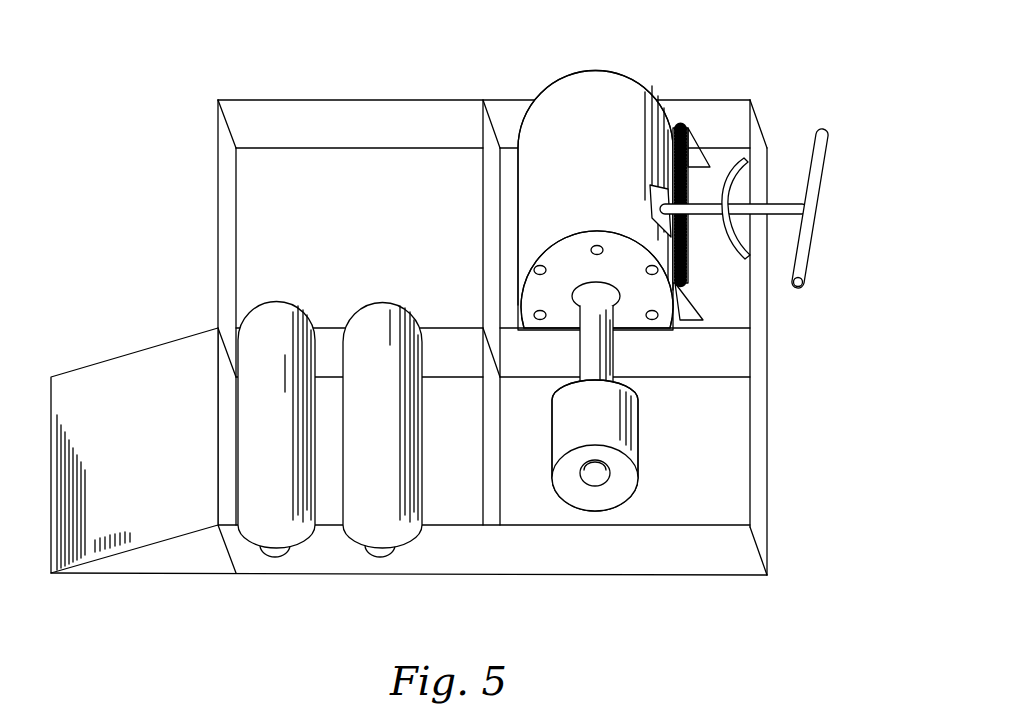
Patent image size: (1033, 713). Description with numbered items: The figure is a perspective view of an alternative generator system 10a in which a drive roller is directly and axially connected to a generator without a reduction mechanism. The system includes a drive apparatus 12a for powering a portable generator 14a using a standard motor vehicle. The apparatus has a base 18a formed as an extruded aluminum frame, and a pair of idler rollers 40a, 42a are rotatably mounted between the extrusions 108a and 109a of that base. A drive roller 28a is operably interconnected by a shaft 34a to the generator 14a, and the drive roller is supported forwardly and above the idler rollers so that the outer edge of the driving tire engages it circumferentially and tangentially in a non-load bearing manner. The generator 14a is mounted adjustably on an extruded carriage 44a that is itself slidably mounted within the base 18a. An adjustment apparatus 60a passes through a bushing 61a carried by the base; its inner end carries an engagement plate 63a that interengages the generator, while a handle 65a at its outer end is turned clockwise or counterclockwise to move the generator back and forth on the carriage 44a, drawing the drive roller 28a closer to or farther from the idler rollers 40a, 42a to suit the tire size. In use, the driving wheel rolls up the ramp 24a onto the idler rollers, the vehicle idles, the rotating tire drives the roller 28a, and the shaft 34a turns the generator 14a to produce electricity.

The generator system 10a is at (178, 117).
The drive apparatus 12a is at (383, 100).
The generator 14a is at (580, 110).
The base 18a is at (626, 550).
The ramp 24a is at (135, 515).
The drive roller 28a is at (636, 427).
The shaft 34a is at (567, 352).
The idler roller 40a is at (290, 302).
The idler roller 42a is at (375, 303).
The carriage 44a is at (714, 305).
The adjustment apparatus 60a is at (828, 125).
The bushing 61a is at (758, 184).
The engagement plate 63a is at (650, 186).
The handle 65a is at (806, 270).
The extrusion 108a is at (432, 555).
The extrusion 109a is at (457, 365).